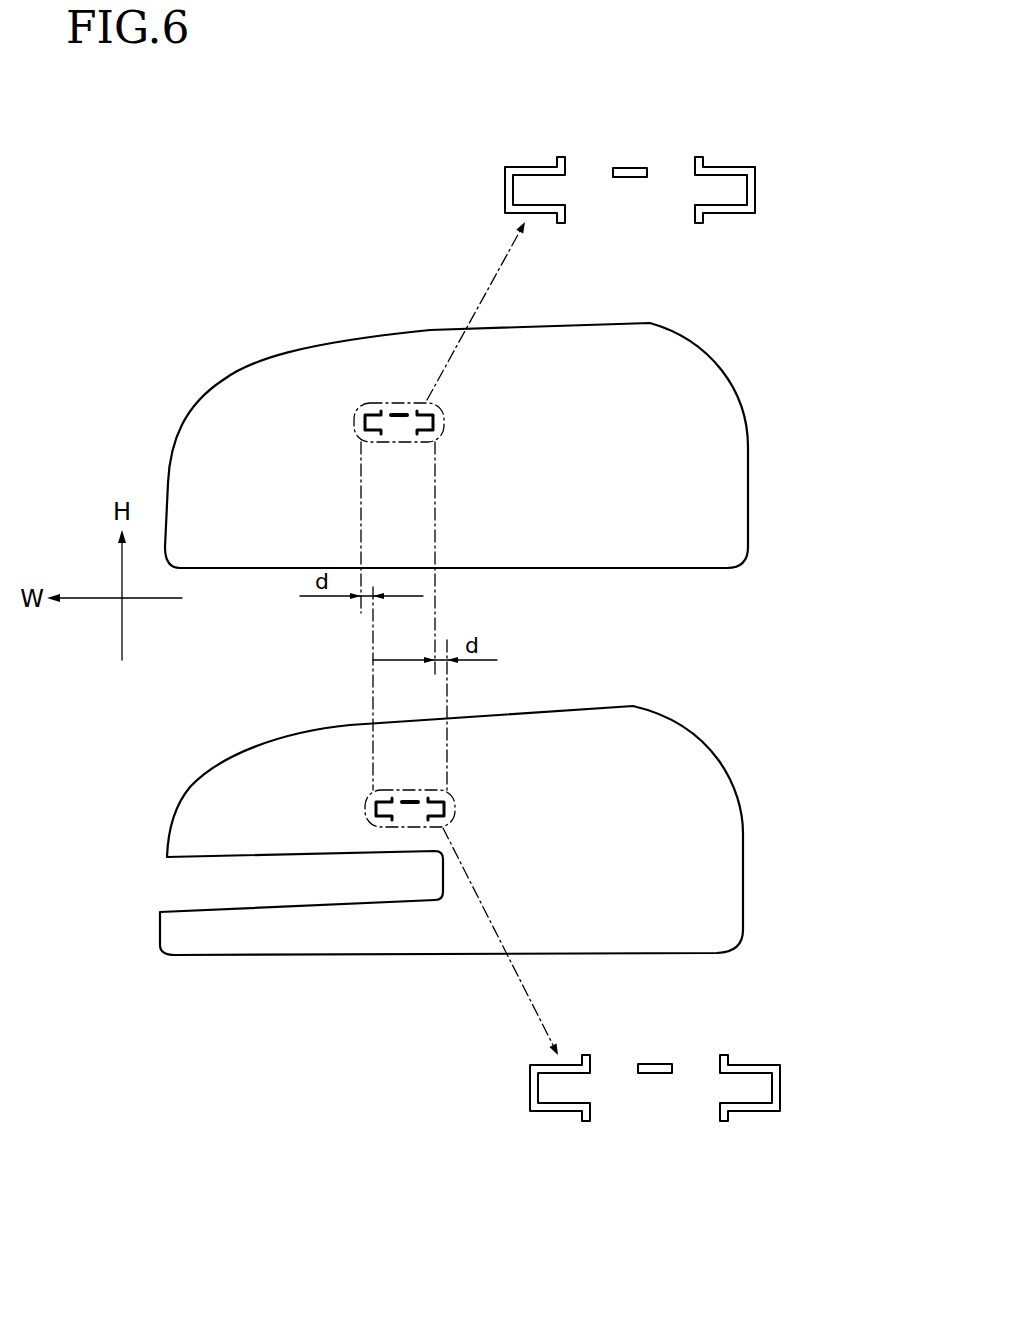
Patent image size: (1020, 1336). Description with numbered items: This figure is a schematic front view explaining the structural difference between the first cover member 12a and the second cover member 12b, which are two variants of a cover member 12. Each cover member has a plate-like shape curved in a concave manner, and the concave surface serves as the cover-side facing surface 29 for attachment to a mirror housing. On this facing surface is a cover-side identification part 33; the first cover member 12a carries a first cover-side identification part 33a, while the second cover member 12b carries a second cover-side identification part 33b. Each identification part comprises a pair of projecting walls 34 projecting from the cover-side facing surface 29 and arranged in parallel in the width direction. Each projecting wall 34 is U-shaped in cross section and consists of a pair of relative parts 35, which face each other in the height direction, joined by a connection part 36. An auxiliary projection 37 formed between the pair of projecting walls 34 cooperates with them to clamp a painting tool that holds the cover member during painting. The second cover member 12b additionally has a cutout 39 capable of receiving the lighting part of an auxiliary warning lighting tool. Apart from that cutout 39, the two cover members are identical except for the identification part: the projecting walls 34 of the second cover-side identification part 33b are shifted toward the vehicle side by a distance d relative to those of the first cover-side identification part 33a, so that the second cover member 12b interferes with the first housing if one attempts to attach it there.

The cover member 12 is at (439, 605).
The first cover member 12a is at (250, 344).
The second cover member 12b is at (250, 733).
The cover-side facing surface 29 is at (532, 499).
The cover-side identification part 33 is at (524, 640).
The first cover-side identification part 33a is at (398, 398).
The second cover-side identification part 33b is at (466, 794).
The projecting wall 34 is at (463, 96).
The relative part 35 is at (537, 170).
The connection part 36 is at (507, 192).
The auxiliary projection 37 is at (636, 178).
The cutout 39 is at (250, 855).